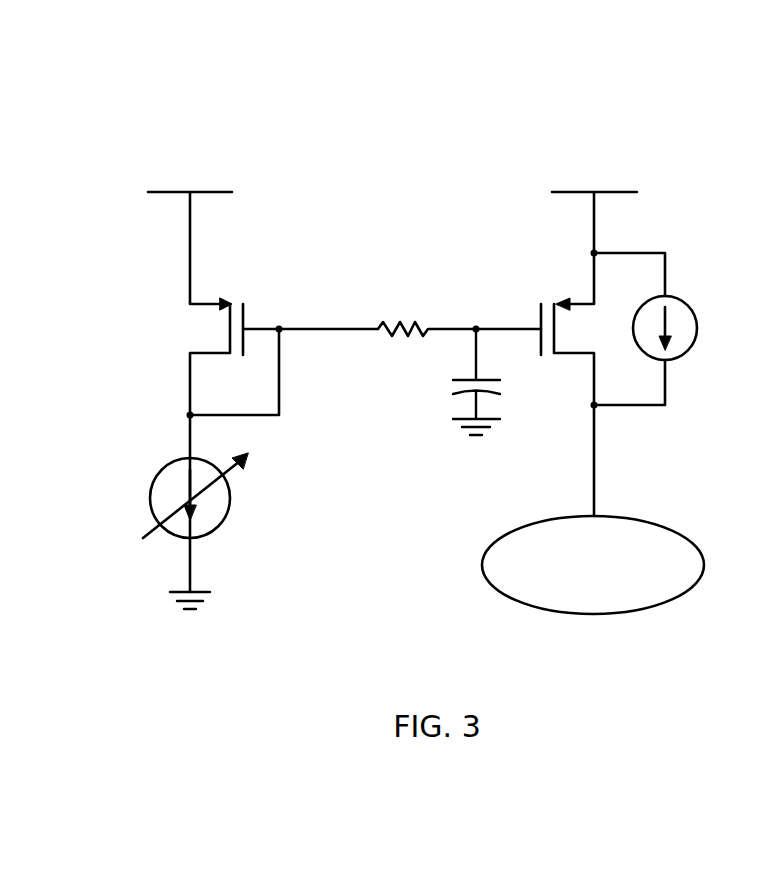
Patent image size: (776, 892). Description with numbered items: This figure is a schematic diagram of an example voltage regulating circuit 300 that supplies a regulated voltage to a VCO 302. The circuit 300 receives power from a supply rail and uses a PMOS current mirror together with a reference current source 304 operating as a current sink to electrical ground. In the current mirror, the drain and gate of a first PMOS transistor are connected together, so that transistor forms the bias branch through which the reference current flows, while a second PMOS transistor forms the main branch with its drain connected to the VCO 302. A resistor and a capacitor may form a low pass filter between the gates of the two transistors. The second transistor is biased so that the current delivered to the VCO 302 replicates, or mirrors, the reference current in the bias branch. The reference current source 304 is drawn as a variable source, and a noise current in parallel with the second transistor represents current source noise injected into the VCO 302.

The voltage regulating circuit 300 is at (243, 115).
The VCO 302 is at (648, 518).
The reference current source 304 is at (176, 458).